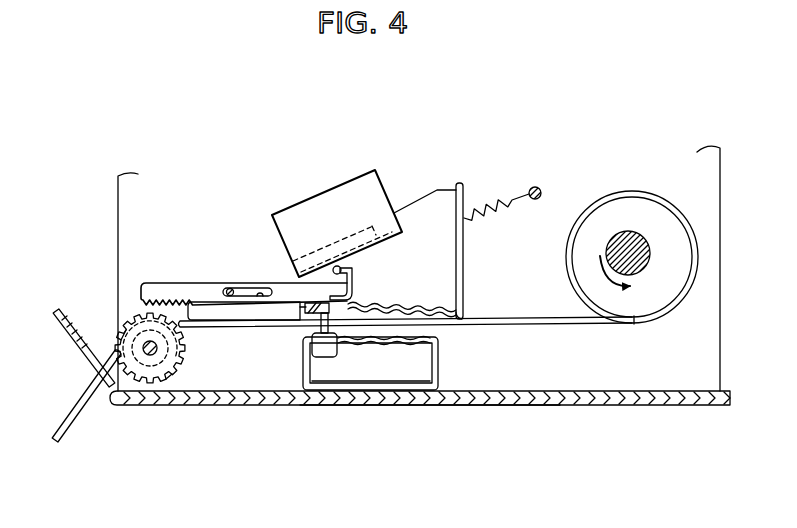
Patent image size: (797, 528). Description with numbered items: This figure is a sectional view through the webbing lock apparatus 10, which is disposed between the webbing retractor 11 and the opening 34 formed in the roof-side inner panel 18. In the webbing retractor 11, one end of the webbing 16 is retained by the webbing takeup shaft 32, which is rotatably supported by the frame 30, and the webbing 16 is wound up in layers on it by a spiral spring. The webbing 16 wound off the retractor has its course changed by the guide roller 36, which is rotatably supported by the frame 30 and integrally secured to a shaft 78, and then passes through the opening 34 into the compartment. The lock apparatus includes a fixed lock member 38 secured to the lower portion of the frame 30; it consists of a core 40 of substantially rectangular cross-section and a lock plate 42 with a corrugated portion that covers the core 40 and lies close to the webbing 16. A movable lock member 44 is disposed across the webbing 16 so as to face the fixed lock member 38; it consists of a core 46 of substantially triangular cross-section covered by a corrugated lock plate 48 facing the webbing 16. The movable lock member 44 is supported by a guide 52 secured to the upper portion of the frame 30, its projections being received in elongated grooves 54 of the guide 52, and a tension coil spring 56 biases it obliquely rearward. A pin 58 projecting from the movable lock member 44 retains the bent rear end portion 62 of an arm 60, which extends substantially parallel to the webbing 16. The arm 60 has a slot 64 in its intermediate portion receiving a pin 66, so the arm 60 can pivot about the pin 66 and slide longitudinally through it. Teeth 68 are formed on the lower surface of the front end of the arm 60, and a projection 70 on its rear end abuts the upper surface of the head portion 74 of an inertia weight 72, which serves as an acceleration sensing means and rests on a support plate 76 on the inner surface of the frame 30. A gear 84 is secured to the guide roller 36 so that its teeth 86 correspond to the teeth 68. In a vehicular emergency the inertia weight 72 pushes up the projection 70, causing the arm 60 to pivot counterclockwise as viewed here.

The webbing lock apparatus 10 is at (319, 163).
The webbing retractor 11 is at (667, 197).
The webbing 16 is at (537, 327).
The roof-side inner panel 18 is at (428, 407).
The frame 30 is at (670, 382).
The webbing takeup shaft 32 is at (622, 240).
The opening 34 is at (82, 365).
The guide roller 36 is at (176, 349).
The fixed lock member 38 is at (442, 370).
The core 40 is at (385, 378).
The lock plate 42 is at (440, 342).
The movable lock member 44 is at (467, 242).
The core 46 is at (432, 208).
The lock plate 48 is at (460, 315).
The guide 52 is at (297, 212).
The elongated grooves 54 is at (293, 263).
The tension coil spring 56 is at (495, 205).
The pin 58 is at (350, 266).
The arm 60 is at (195, 288).
The bent rear end portion 62 is at (353, 268).
The slot 64 is at (261, 298).
The pin 66 is at (231, 288).
The teeth 68 is at (184, 307).
The projection 70 is at (357, 298).
The inertia weight 72 is at (337, 352).
The head portion 74 is at (303, 310).
The support plate 76 is at (320, 326).
The shaft 78 is at (150, 357).
The gear 84 is at (177, 377).
The teeth 86 is at (128, 323).